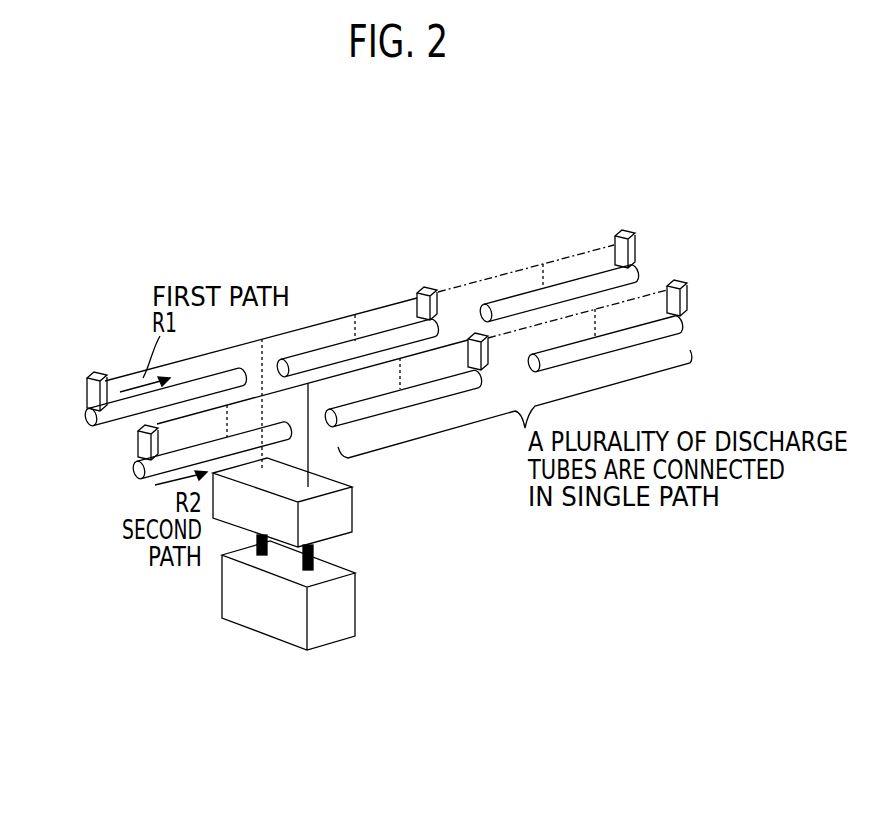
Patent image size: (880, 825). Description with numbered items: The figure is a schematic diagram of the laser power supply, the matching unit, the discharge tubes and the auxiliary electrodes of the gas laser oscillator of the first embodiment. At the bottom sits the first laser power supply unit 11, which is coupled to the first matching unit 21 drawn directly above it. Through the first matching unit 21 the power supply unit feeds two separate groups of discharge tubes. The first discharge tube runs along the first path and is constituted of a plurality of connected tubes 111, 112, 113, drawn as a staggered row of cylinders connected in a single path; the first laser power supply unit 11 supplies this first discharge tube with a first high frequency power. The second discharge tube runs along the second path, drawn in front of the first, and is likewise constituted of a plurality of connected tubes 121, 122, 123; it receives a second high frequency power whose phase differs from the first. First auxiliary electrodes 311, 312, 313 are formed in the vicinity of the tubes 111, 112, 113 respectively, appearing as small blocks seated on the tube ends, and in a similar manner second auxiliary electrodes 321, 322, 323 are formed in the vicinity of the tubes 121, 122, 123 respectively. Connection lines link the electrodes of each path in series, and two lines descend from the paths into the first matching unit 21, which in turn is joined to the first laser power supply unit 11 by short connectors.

The first laser power supply unit 11 is at (355, 600).
The first matching unit 21 is at (340, 483).
The first discharge tube 111 is at (86, 420).
The first discharge tube 112 is at (433, 326).
The first discharge tube 113 is at (642, 270).
The second discharge tube 121 is at (134, 476).
The second discharge tube 122 is at (480, 373).
The second discharge tube 123 is at (688, 320).
The first auxiliary electrode 311 is at (95, 371).
The first auxiliary electrode 312 is at (425, 286).
The first auxiliary electrode 313 is at (625, 231).
The second auxiliary electrode 321 is at (138, 444).
The second auxiliary electrode 322 is at (474, 330).
The second auxiliary electrode 323 is at (680, 280).